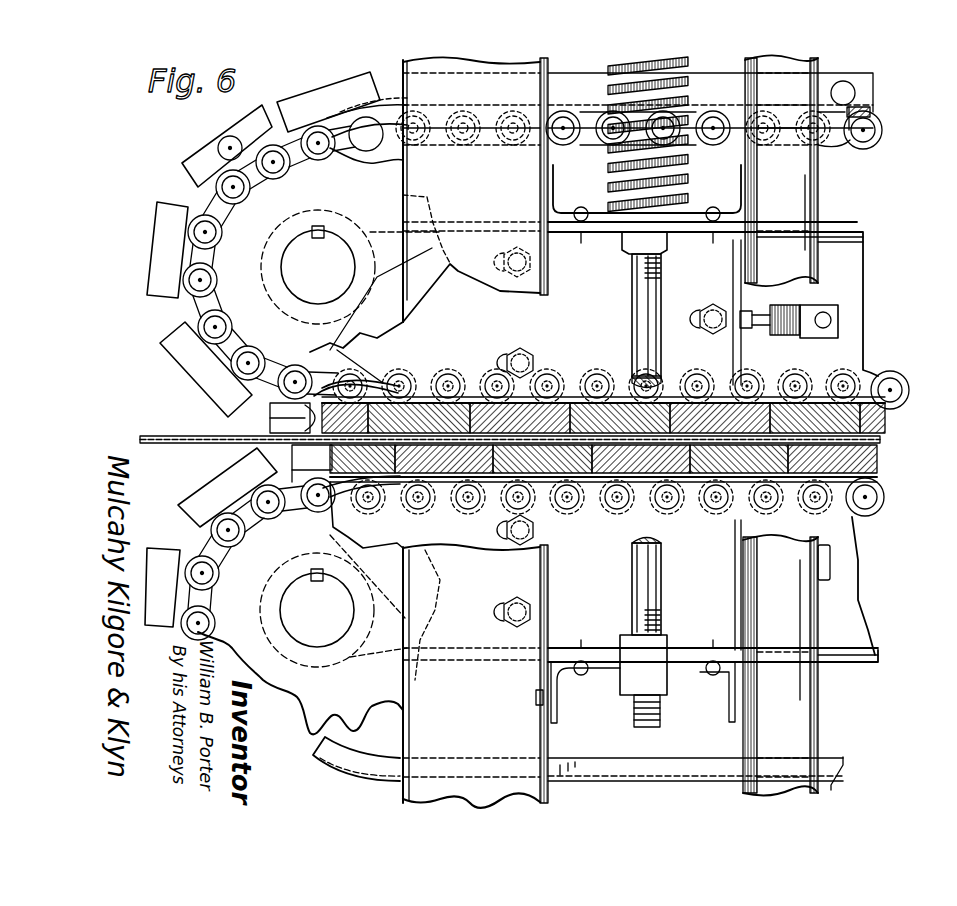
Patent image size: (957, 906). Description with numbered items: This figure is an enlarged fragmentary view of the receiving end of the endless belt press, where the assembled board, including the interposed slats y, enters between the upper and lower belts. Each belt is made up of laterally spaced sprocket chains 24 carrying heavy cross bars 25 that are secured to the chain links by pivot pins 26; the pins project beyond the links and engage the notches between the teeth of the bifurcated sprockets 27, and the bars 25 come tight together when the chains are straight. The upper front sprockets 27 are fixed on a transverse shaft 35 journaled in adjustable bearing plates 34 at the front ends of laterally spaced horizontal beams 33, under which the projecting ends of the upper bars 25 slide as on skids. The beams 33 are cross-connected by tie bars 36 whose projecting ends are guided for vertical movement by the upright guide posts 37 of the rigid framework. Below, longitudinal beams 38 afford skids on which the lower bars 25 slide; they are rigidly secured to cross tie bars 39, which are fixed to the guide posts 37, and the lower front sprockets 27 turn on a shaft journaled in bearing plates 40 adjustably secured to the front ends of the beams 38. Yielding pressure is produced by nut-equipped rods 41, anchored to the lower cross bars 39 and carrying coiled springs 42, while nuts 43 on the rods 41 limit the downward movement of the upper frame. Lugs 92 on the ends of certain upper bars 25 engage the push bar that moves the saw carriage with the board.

The sprocket chain 24 is at (878, 141).
The cross bar 25 is at (163, 295).
The pivot pin 26 is at (228, 187).
The sprocket 27 is at (319, 464).
The horizontal beam 33 is at (877, 262).
The adjustable bearing plate 34 is at (643, 247).
The transverse shaft 35 is at (318, 267).
The tie bar 36 is at (604, 222).
The upright guide post 37 is at (613, 431).
The lower beam 38 is at (850, 624).
The cross tie bar 39 is at (699, 672).
The bearing plate 40 is at (713, 694).
The nut-equipped rod 41 is at (640, 357).
The coiled spring 42 is at (608, 180).
The nut 43 is at (645, 240).
The lug 92 is at (228, 145).
The slat y is at (216, 443).